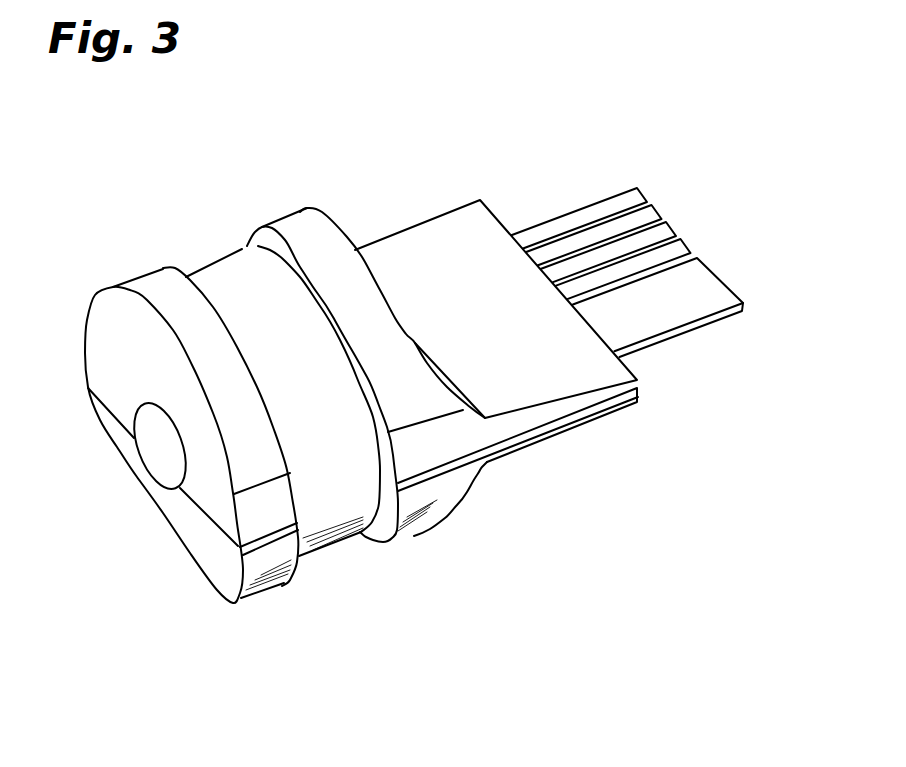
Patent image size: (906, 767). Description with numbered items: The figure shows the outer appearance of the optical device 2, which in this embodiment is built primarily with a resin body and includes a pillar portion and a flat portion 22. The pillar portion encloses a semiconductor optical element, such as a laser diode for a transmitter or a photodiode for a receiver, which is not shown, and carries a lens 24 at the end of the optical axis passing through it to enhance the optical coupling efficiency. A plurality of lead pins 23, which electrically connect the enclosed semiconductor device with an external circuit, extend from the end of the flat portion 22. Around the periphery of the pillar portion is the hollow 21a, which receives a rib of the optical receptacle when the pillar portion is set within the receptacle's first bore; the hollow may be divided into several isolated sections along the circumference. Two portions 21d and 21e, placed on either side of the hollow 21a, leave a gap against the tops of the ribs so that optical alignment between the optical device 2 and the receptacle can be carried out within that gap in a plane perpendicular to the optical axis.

The optical device 2 is at (417, 154).
The hollow 21a is at (238, 278).
The portion 21d is at (425, 495).
The portion 21e is at (271, 562).
The flat portion 22 is at (569, 400).
The lead pins 23 is at (704, 285).
The lens 24 is at (155, 450).